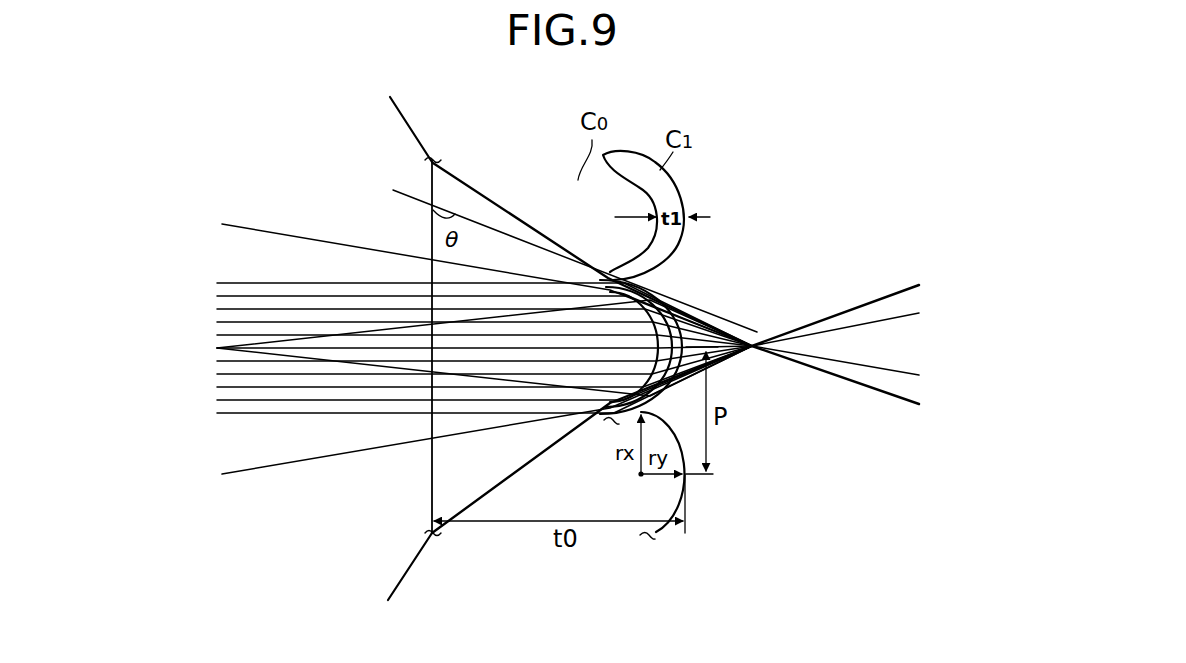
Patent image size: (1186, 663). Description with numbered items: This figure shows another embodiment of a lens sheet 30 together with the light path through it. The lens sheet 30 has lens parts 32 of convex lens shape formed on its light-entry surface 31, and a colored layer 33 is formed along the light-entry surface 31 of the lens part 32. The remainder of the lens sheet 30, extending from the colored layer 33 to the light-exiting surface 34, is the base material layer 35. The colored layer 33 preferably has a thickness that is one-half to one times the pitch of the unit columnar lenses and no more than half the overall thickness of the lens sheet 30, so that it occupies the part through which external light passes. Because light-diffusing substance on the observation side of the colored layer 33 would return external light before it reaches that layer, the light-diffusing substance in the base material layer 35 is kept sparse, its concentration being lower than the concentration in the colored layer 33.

The lens sheet 30 is at (694, 357).
The light-entry surface 31 is at (688, 228).
The lens part 32 is at (668, 264).
The colored layer 33 is at (683, 190).
The light-exiting surface 34 is at (431, 241).
The base material layer 35 is at (432, 490).